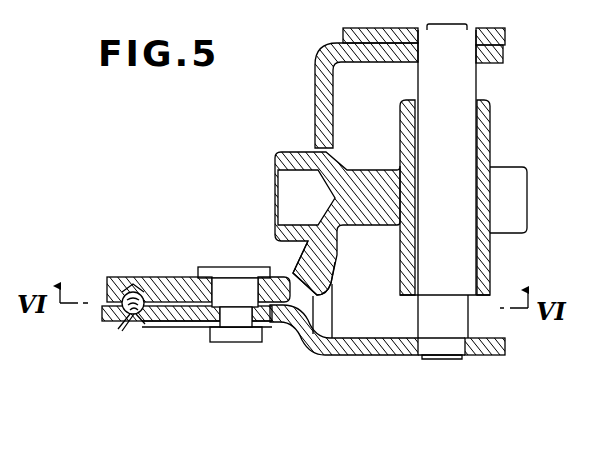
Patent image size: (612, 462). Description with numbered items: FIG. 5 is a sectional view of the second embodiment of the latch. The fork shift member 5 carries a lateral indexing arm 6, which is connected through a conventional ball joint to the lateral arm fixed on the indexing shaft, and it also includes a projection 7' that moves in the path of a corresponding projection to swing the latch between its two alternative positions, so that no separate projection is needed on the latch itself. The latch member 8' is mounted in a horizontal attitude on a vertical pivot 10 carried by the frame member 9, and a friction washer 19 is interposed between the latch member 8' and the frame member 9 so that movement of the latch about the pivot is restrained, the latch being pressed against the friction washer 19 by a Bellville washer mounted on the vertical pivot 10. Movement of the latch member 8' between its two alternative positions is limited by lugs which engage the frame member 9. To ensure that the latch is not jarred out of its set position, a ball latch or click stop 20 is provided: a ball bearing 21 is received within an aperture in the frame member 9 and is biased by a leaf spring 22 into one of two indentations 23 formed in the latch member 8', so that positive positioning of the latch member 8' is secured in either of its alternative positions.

The fork shift member 5 is at (490, 128).
The lateral indexing arm 6 is at (377, 221).
The projection 7' is at (335, 279).
The latch member 8' is at (198, 263).
The frame member 9 is at (362, 350).
The vertical pivot 10 is at (233, 332).
The friction washer 19 is at (208, 267).
The ball latch 20 is at (130, 338).
The ball bearing 21 is at (120, 322).
The leaf spring 22 is at (162, 323).
The indentations 23 is at (122, 278).